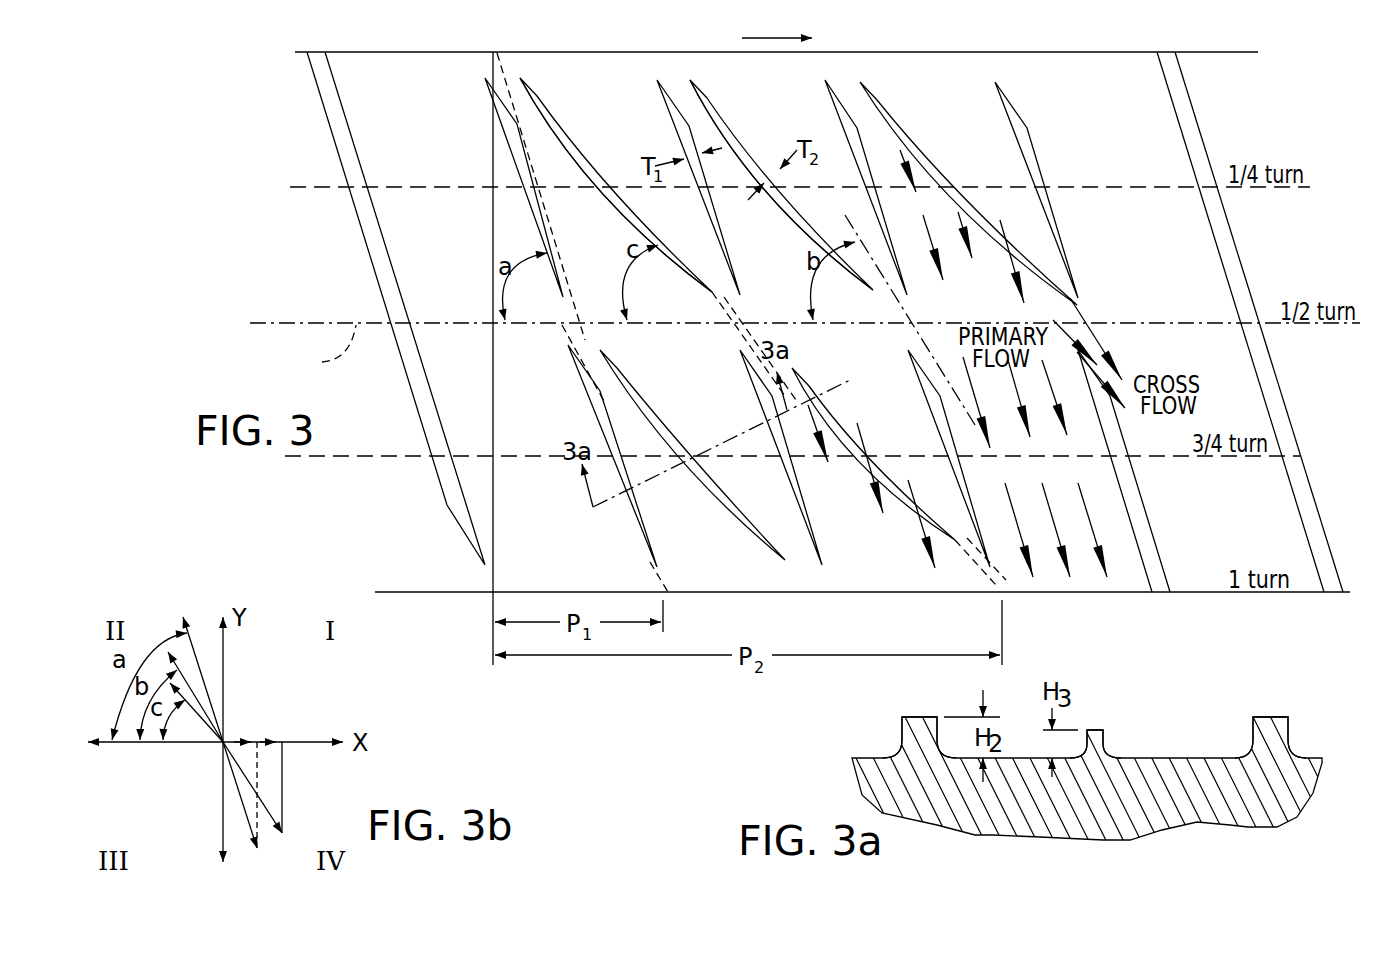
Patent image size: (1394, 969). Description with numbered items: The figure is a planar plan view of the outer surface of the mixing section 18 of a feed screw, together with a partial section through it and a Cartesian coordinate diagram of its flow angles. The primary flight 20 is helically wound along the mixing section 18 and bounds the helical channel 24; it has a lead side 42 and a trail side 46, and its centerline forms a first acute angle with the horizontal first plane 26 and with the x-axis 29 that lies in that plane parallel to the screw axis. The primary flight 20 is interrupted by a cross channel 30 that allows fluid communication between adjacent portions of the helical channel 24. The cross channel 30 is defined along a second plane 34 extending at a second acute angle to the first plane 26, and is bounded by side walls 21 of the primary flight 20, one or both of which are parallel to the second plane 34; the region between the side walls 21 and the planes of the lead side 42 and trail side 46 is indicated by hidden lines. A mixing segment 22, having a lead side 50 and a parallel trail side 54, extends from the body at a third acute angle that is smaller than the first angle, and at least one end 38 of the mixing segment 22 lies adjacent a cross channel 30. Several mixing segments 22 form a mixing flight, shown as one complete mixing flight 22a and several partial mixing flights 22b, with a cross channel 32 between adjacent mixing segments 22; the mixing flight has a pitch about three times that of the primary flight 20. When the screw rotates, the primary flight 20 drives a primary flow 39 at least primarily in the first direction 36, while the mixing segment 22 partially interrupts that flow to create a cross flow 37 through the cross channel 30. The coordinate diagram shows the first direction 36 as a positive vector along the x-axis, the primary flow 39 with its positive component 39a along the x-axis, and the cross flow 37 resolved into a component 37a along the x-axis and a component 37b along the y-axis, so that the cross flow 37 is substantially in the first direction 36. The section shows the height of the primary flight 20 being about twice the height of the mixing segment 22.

In FIG. 3, the mixing section 18 is at (902, 45).
In FIG. 3, the primary flight 20 is at (541, 219).
In FIG. 3A, the primary flight 20 is at (917, 728).
In FIG. 3, the side walls 21 is at (553, 273).
In FIG. 3, the mixing segment 22 is at (580, 152).
In FIG. 3A, the mixing segment 22 is at (1095, 738).
In FIG. 3, the complete mixing flight 22a is at (541, 104).
In FIG. 3, the partial mixing flights 22b is at (707, 98).
In FIG. 3, the helical channel 24 is at (1097, 586).
In FIG. 3, the first plane 26 is at (262, 318).
In FIG. 3, the x-axis 29 is at (326, 352).
In FIG. 3, the cross channel 30 is at (565, 313).
In FIG. 3, the cross channel 32 is at (740, 318).
In FIG. 3, the second plane 34 is at (841, 216).
In FIG. 3, the first direction 36 is at (777, 23).
In FIG. 3B, the first direction 36 is at (302, 738).
In FIG. 3, the cross flow direction 37 is at (1085, 318).
In FIG. 3B, the cross flow direction 37 is at (260, 802).
In FIG. 3B, the flow component along the x-axis 37a is at (262, 738).
In FIG. 3B, the flow component along the y-axis 37b is at (282, 803).
In FIG. 3, the end of the mixing segment 38 is at (670, 257).
In FIG. 3, the primary flow 39 is at (1058, 383).
In FIG. 3B, the primary flow 39 is at (247, 803).
In FIG. 3B, the component of the primary flow 39a is at (232, 738).
In FIG. 3, the lead side of the primary flight 42 is at (619, 450).
In FIG. 3, the trail side of the primary flight 46 is at (599, 424).
In FIG. 3, the lead side of the mixing segment 50 is at (718, 478).
In FIG. 3, the trail side of the mixing segment 54 is at (726, 503).